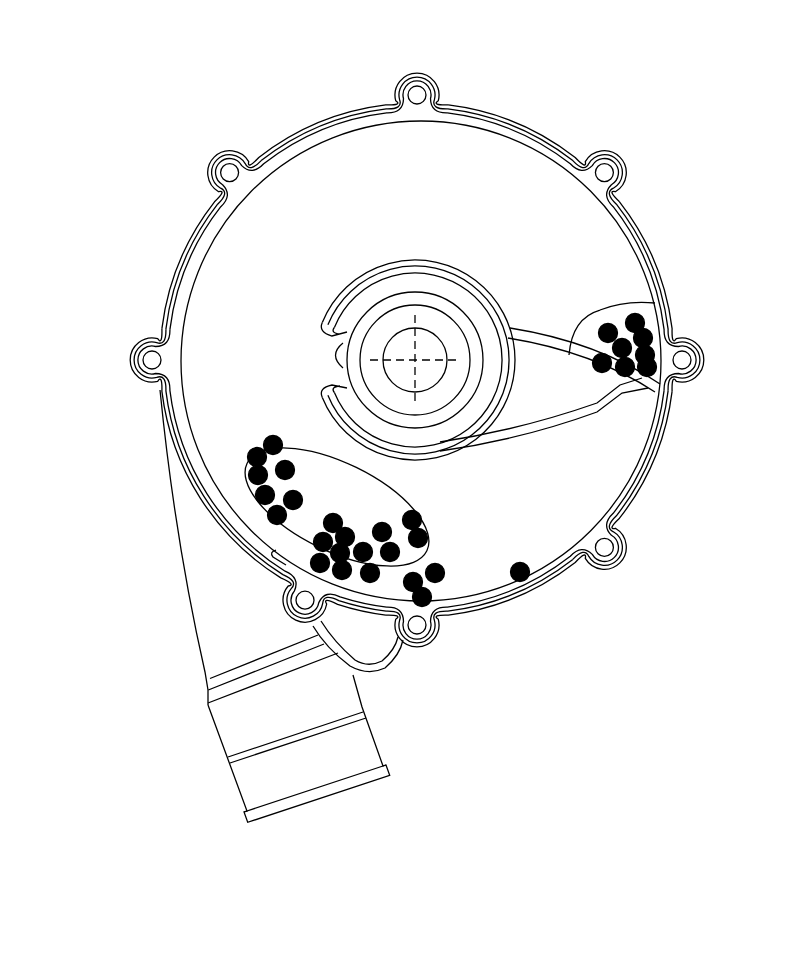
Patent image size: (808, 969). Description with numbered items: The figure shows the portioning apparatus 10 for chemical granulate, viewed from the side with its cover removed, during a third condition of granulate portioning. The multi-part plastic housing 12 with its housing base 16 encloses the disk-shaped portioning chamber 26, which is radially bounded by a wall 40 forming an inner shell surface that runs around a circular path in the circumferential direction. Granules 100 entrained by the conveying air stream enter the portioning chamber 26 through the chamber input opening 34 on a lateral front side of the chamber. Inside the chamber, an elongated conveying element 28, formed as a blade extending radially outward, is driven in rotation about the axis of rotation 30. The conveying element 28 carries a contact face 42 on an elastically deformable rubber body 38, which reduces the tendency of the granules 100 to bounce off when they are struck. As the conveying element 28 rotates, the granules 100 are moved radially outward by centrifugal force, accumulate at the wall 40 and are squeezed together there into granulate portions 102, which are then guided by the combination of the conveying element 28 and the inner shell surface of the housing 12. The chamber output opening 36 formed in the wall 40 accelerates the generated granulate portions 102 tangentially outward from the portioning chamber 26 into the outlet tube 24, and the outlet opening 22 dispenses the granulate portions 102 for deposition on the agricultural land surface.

The portioning apparatus 10 is at (250, 108).
The housing 12 is at (705, 276).
The housing base 16 is at (550, 133).
The outlet opening 22 is at (328, 808).
The outlet tube 24 is at (216, 610).
The portioning chamber 26 is at (592, 484).
The conveying element 28 is at (563, 397).
The axis of rotation 30 is at (430, 348).
The chamber input opening 34 is at (313, 462).
The chamber output opening 36 is at (226, 506).
The rubber body 38 is at (545, 345).
The wall 40 is at (322, 150).
The contact face 42 is at (600, 298).
The granules 100 is at (530, 578).
The granulate portions 102 is at (616, 318).